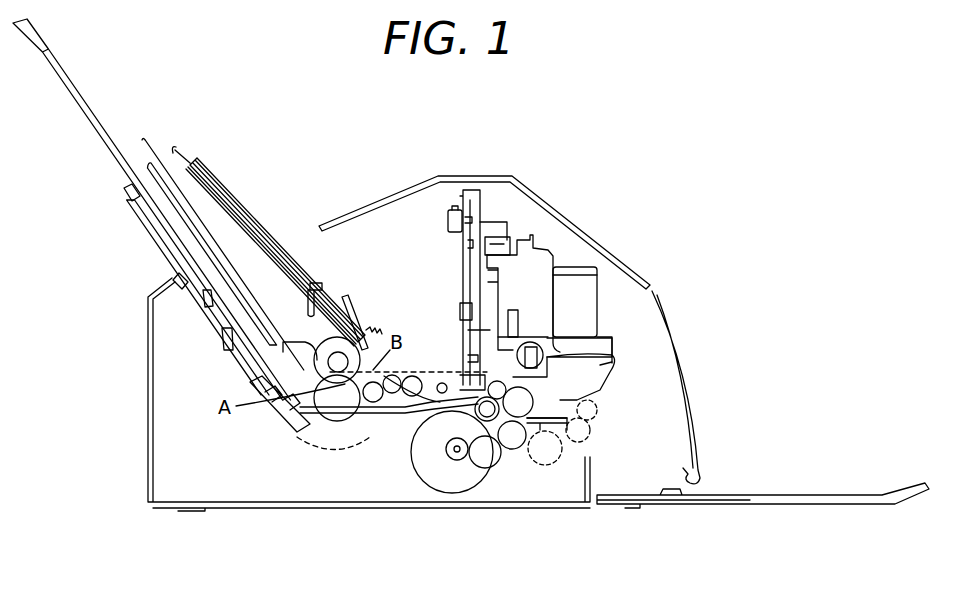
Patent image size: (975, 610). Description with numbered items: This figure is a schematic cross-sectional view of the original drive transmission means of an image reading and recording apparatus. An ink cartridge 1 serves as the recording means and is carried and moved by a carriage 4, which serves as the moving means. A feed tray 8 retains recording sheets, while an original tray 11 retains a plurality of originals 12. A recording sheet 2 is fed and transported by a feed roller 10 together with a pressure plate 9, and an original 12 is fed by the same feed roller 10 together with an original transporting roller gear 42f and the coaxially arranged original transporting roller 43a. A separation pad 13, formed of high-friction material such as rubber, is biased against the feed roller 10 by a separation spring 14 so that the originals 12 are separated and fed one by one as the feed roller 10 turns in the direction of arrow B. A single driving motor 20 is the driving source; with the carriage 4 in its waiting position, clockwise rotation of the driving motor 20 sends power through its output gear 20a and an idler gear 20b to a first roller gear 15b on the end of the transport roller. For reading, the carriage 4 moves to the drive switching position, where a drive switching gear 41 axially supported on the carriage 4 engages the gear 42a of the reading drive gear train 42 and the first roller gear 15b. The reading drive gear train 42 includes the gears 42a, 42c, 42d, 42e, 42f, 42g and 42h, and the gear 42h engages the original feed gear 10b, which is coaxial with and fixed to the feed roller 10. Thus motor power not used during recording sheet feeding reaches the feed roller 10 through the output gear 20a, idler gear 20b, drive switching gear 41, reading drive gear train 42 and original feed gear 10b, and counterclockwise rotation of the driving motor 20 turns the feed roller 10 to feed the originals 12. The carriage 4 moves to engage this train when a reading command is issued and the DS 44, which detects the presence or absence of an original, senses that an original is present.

The ink cartridge 1 is at (580, 287).
The recording sheet 2 is at (165, 162).
The carriage 4 is at (543, 257).
The feed tray 8 is at (130, 198).
The pressure plate 9 is at (176, 280).
The feed roller 10 is at (317, 340).
The original feed gear 10b is at (330, 364).
The original tray 11 is at (215, 185).
The original 12 is at (248, 217).
The separation pad 13 is at (348, 298).
The separation spring 14 is at (374, 330).
The first roller gear 15b is at (522, 448).
The driving motor 20 is at (446, 478).
The output gear 20a is at (459, 460).
The idler gear 20b is at (488, 465).
The drive switching gear 41 is at (600, 365).
The reading drive gear train 42 is at (300, 442).
The gear 42a is at (565, 432).
The gear 42c is at (585, 415).
The gear 42d is at (412, 398).
The gear 42e is at (393, 400).
The original transporting roller gear 42f is at (378, 410).
The gear 42g is at (345, 418).
The gear 42h is at (303, 420).
The original transporting roller 43a is at (403, 378).
The DS 44 is at (314, 283).